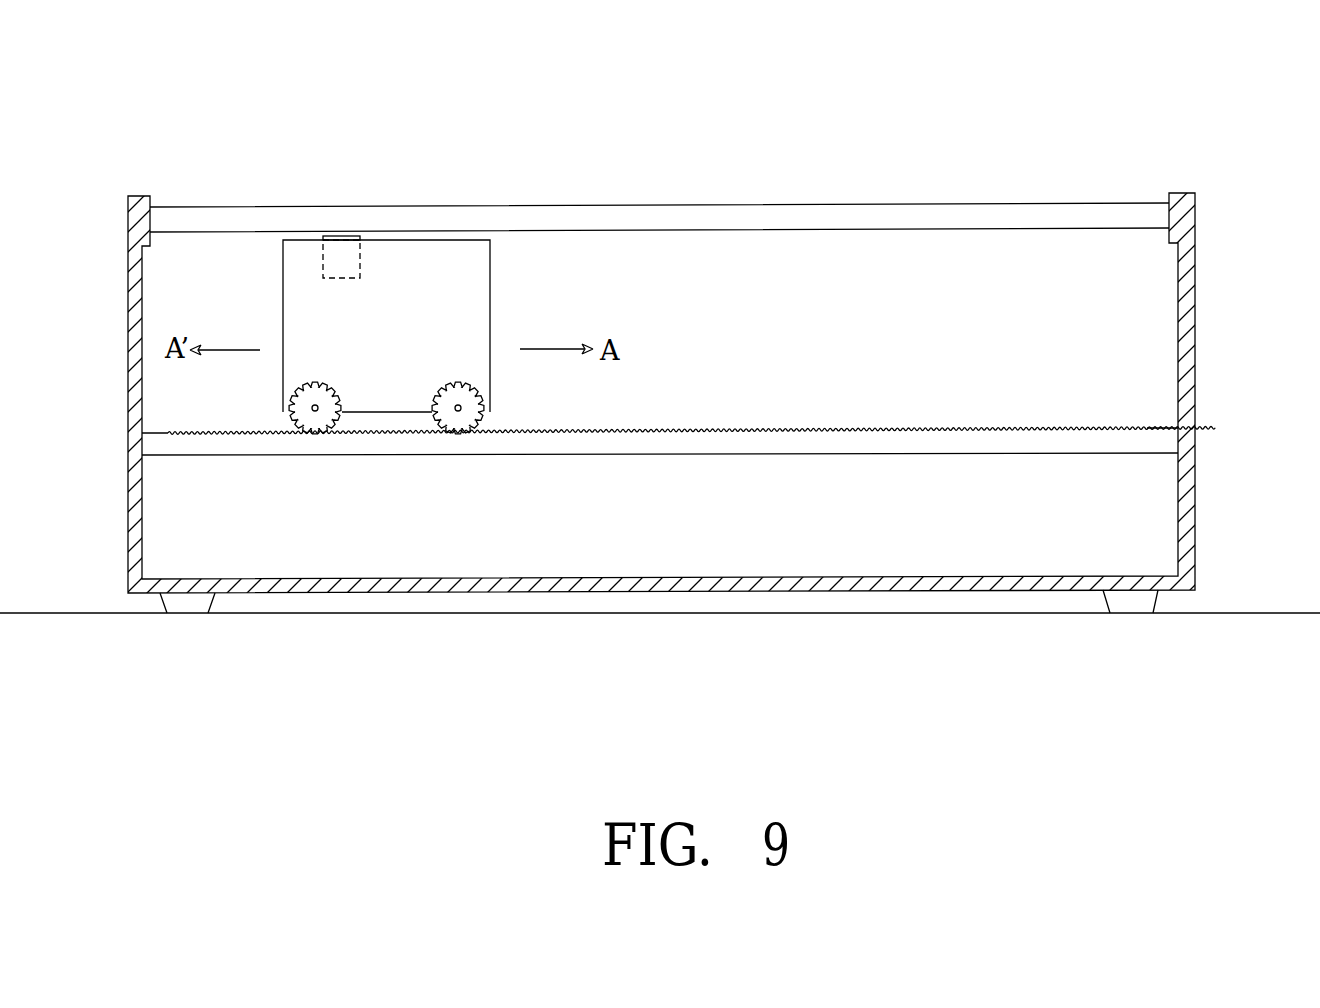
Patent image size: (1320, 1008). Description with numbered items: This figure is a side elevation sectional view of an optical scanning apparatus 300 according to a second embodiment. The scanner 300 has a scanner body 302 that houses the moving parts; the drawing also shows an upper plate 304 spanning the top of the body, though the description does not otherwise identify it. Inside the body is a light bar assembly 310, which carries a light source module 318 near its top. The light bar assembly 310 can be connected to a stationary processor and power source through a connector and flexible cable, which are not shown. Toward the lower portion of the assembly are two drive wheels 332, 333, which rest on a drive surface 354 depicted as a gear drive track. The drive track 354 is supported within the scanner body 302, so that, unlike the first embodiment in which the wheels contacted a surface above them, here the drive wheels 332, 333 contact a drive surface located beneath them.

The optical scanning apparatus 300 is at (1010, 112).
The scanner body 302 is at (1196, 362).
The transparent platen / glass plate 304 is at (750, 217).
The light bar assembly 310 is at (508, 288).
The light source module 318 is at (362, 266).
The drive wheel 332 is at (319, 385).
The drive wheel 333 is at (456, 385).
The drive surface 354 is at (551, 452).